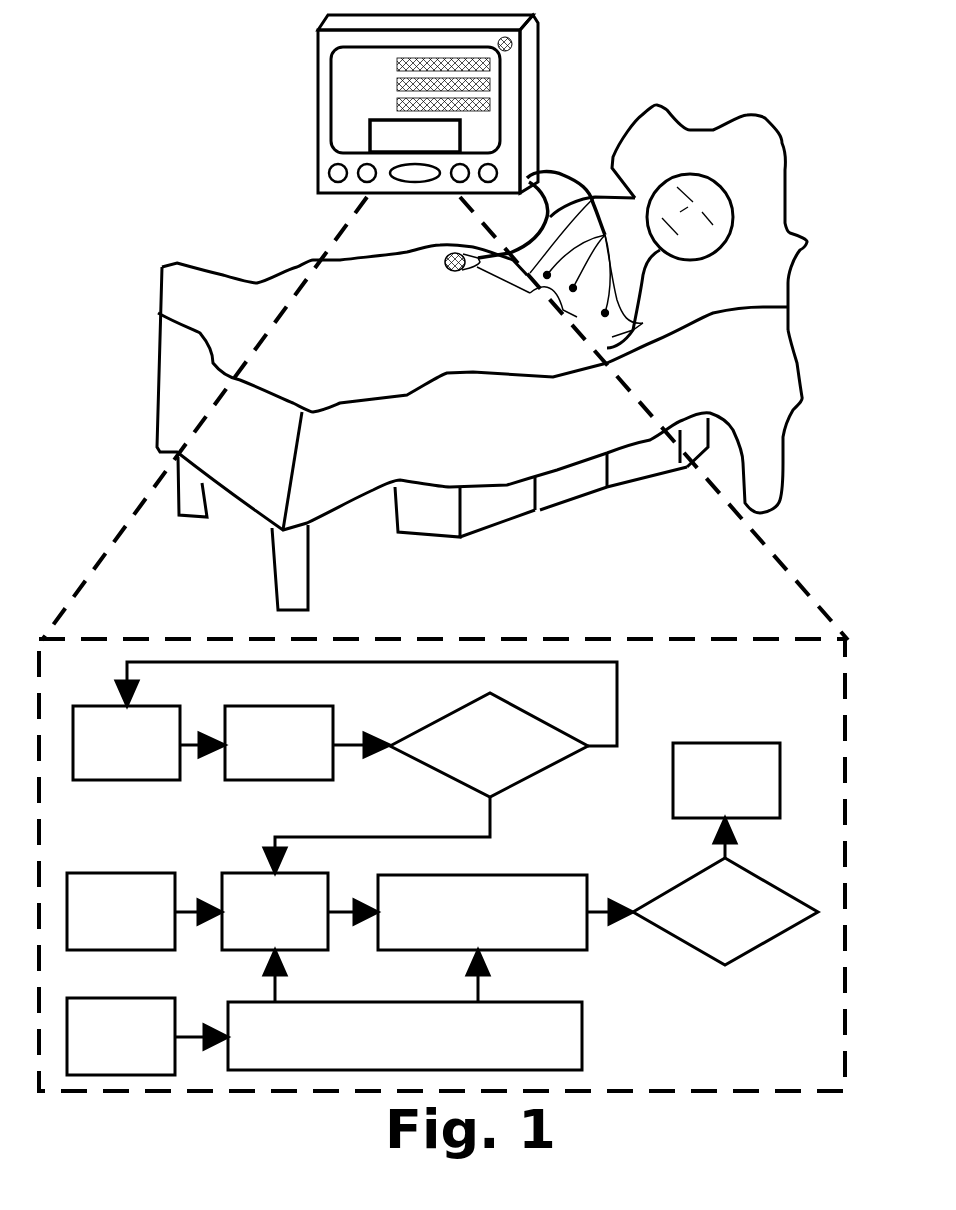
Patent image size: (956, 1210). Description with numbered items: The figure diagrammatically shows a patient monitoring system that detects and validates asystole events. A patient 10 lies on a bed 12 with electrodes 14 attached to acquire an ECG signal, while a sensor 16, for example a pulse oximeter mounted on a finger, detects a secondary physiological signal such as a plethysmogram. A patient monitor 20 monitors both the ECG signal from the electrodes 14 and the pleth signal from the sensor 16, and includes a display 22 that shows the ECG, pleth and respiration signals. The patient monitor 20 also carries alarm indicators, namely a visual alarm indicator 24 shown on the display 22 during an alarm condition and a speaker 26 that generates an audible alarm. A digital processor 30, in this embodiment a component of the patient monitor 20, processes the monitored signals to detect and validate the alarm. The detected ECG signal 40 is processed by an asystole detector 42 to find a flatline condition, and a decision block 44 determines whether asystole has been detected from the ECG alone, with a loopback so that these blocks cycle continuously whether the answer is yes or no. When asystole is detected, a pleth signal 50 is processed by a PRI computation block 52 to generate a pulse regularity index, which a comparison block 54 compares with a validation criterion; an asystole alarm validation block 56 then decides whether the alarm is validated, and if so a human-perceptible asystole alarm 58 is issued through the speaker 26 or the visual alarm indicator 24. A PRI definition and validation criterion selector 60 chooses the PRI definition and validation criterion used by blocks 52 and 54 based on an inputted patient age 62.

The patient 10 is at (633, 283).
The bed 12 is at (533, 437).
The electrodes 14 is at (602, 313).
The sensor 16 is at (472, 275).
The patient monitor 20 is at (423, 136).
The display 22 is at (331, 115).
The visual alarm indicator 24 is at (370, 140).
The speaker 26 is at (517, 38).
The digital processor 30 is at (637, 1095).
The ECG signal 40 is at (147, 712).
The asystole detector 42 is at (278, 712).
The decision block 44 is at (510, 712).
The pleth signal 50 is at (143, 882).
The pulse regularity index computation block 52 is at (323, 893).
The comparison block 54 is at (567, 875).
The asystole alarm validation block 56 is at (768, 900).
The asystole alarm 58 is at (782, 762).
The PRI definition and validation criterion selector 60 is at (573, 1042).
The patient age 62 is at (147, 1003).